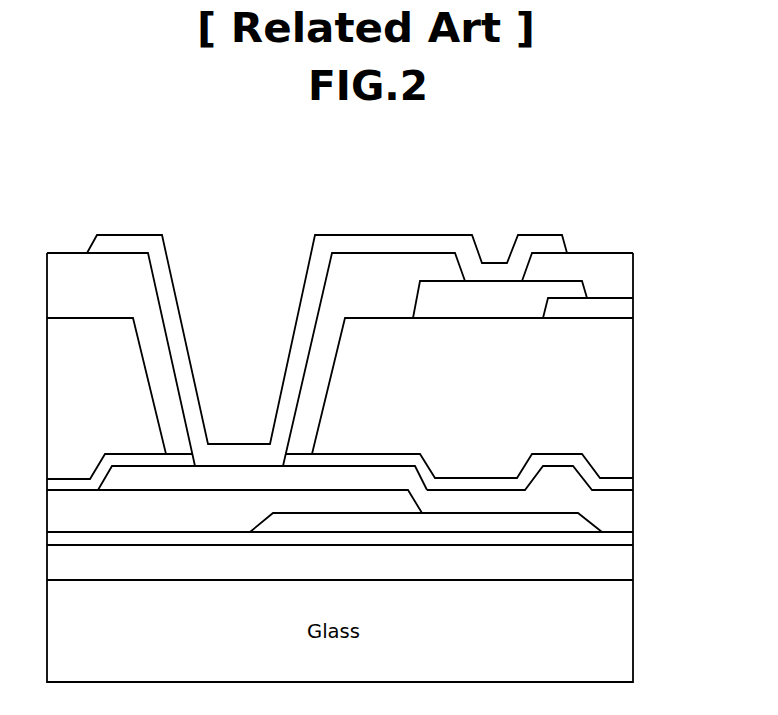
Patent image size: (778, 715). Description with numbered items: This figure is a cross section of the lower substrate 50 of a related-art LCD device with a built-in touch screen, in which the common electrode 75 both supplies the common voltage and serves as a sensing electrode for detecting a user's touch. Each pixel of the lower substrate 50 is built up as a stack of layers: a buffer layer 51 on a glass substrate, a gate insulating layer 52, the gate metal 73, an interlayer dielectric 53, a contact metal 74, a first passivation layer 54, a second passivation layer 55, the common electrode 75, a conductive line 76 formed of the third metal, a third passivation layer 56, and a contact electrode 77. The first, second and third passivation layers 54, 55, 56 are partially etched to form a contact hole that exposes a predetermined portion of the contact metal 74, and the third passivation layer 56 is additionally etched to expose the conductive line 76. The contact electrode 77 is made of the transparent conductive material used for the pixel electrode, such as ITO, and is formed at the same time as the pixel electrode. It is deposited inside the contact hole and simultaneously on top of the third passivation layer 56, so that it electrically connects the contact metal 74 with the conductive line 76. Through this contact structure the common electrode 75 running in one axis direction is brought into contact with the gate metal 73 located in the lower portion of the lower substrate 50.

The lower substrate 50 is at (362, 182).
The buffer layer 51 is at (627, 563).
The gate insulating layer 52 is at (627, 538).
The interlayer dielectric (ILD) 53 is at (627, 503).
The first passivation layer (PAS0) 54 is at (627, 483).
The second passivation layer (PAS1) 55 is at (627, 393).
The third passivation layer (PAS2) 56 is at (627, 263).
The gate metal 73 is at (578, 515).
The contact metal 74 is at (182, 482).
The common electrode (Vcom) 75 is at (627, 308).
The conductive line (3rd metal) 76 is at (490, 311).
The contact electrode 77 is at (177, 330).